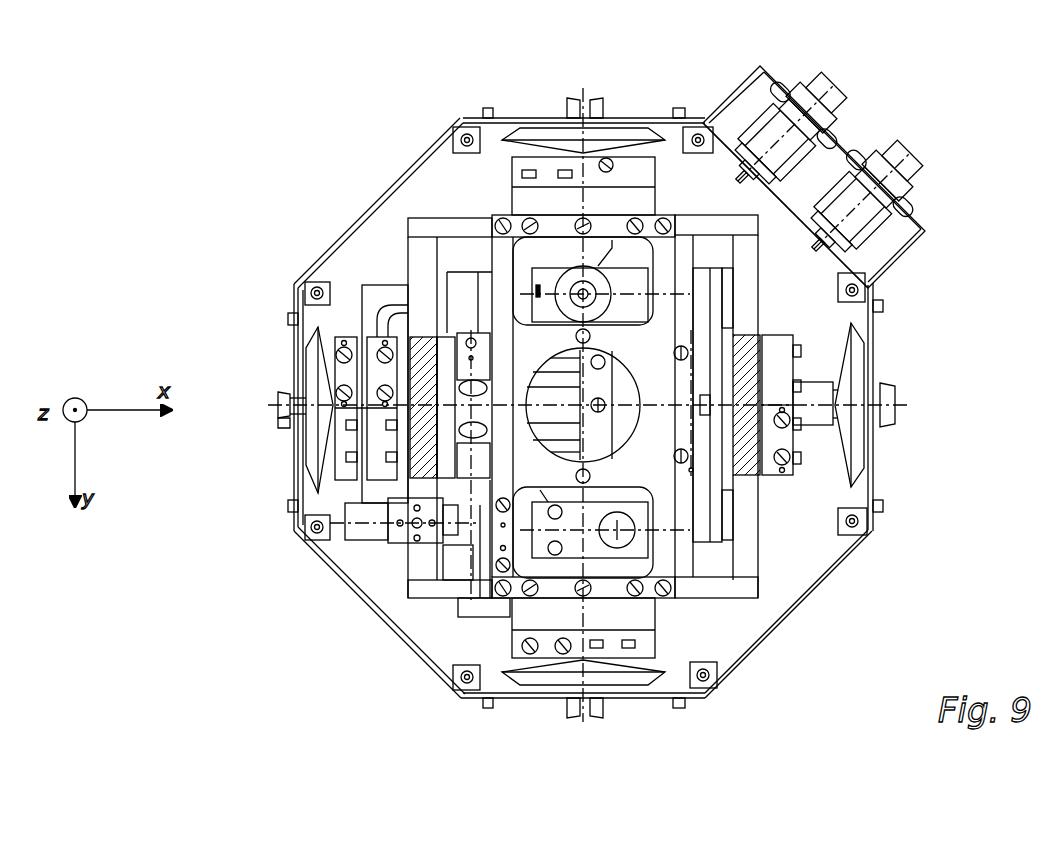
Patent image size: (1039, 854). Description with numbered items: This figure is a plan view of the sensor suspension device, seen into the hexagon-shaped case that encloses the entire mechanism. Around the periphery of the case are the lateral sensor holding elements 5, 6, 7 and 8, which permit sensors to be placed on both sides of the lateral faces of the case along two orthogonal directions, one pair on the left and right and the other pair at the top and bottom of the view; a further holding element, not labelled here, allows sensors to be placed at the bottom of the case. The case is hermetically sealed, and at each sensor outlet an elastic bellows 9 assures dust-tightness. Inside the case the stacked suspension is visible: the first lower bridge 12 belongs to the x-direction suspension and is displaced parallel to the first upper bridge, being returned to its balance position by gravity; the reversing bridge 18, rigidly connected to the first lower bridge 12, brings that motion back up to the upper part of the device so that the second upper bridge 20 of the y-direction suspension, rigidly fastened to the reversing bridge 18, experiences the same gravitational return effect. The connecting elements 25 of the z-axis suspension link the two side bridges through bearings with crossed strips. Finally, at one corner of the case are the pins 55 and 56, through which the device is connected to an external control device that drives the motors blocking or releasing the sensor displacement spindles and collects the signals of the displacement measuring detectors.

The sensor holding element 5 is at (288, 403).
The sensor holding element 6 is at (885, 397).
The sensor holding element 7 is at (590, 107).
The sensor holding element 8 is at (563, 707).
The elastic bellows 9 is at (542, 138).
The first lower bridge 12 is at (417, 248).
The reversing bridge 18 is at (450, 225).
The second upper bridge 20 is at (497, 317).
The connecting elements 25 is at (370, 313).
The pin 55 is at (798, 93).
The pin 56 is at (870, 163).